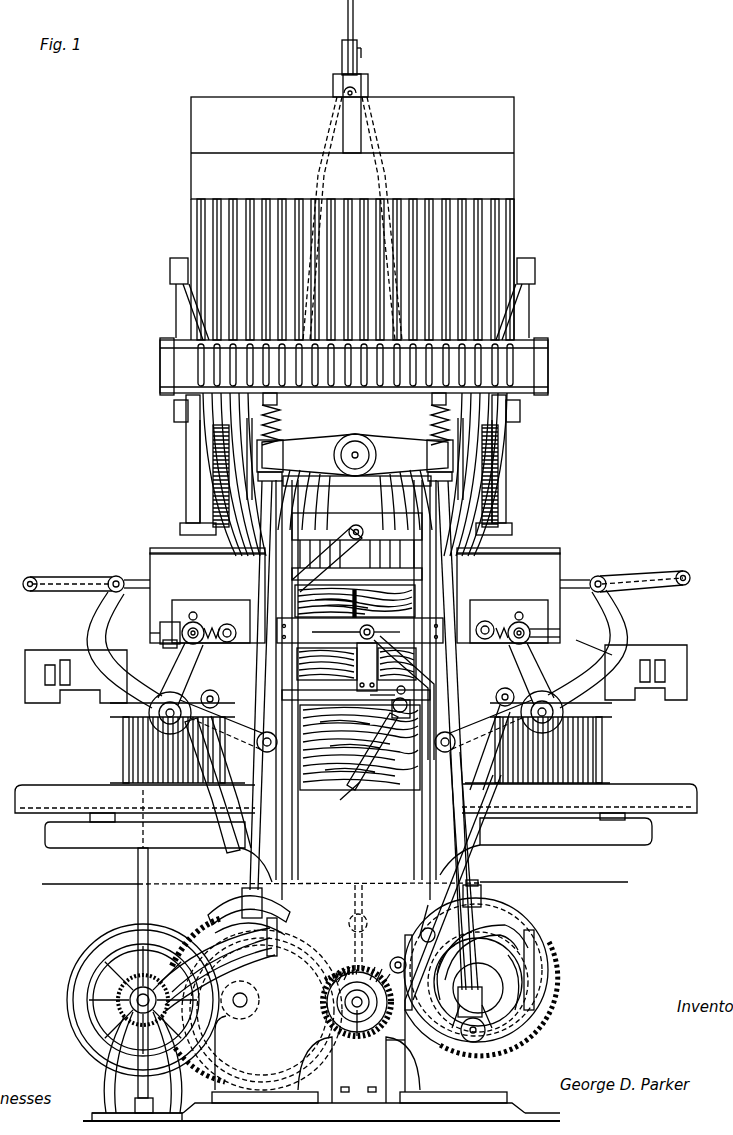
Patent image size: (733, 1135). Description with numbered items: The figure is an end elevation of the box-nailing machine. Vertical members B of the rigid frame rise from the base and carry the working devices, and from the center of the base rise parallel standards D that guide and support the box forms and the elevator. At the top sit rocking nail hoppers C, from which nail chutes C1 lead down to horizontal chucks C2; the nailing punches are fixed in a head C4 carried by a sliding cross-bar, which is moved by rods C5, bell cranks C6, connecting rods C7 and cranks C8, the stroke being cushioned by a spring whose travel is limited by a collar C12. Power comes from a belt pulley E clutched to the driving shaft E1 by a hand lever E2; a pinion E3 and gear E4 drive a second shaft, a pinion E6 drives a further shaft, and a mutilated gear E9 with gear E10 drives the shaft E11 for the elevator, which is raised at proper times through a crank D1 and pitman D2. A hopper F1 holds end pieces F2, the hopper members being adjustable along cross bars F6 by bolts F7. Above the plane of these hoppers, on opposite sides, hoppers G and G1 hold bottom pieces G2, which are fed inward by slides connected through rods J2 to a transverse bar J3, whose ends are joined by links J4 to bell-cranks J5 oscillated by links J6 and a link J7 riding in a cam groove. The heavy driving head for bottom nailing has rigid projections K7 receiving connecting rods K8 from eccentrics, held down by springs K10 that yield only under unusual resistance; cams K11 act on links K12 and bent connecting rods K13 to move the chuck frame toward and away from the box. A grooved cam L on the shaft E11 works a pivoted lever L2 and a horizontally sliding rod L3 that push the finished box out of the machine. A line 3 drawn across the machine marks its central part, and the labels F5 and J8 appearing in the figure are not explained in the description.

The vertical members B is at (366, 96).
The rocking nail hoppers C is at (352, 218).
The nail chutes C1 is at (515, 236).
The horizontal chucks C2 is at (262, 605).
The head C4 is at (356, 620).
The rods C5 is at (160, 632).
The bell cranks C6 is at (356, 716).
The connecting rods C7 is at (478, 902).
The cranks C8 is at (468, 1040).
The collar C12 is at (165, 644).
The standards D is at (357, 1027).
The crank D1 is at (372, 918).
The pitman D2 is at (365, 890).
The belt pulley E is at (78, 985).
The driving shaft E1 is at (130, 1004).
The hand lever E2 is at (138, 882).
The pinion E3 is at (128, 999).
The gear E4 is at (200, 935).
The pinion E6 is at (342, 965).
The mutilated gear E9 is at (262, 1010).
The gear E10 is at (396, 958).
The shaft E11 is at (370, 1037).
The hopper F1 is at (356, 733).
The end pieces F2 is at (368, 697).
The link F5 is at (348, 792).
The cross bars F6 is at (105, 822).
The bolts F7 is at (545, 1056).
The hopper G is at (492, 472).
The hopper G1 is at (198, 460).
The bottom pieces G2 is at (213, 498).
The rod J2 is at (118, 577).
The transverse bar J3 is at (31, 577).
The links J4 is at (70, 577).
The bell-cranks J5 is at (95, 622).
The links J6 is at (230, 828).
The link J7 is at (427, 919).
The gear wheel J8 is at (556, 975).
The rigid projections K7 is at (452, 456).
The connecting rods K8 is at (446, 578).
The springs K10 is at (262, 420).
The cams K11 is at (216, 1005).
The links K12 is at (262, 1002).
The bent connecting rods K13 is at (357, 552).
The cam L is at (395, 1046).
The pivoted lever L2 is at (404, 687).
The sliding rod L3 is at (360, 687).
The section line 3 is at (330, 884).